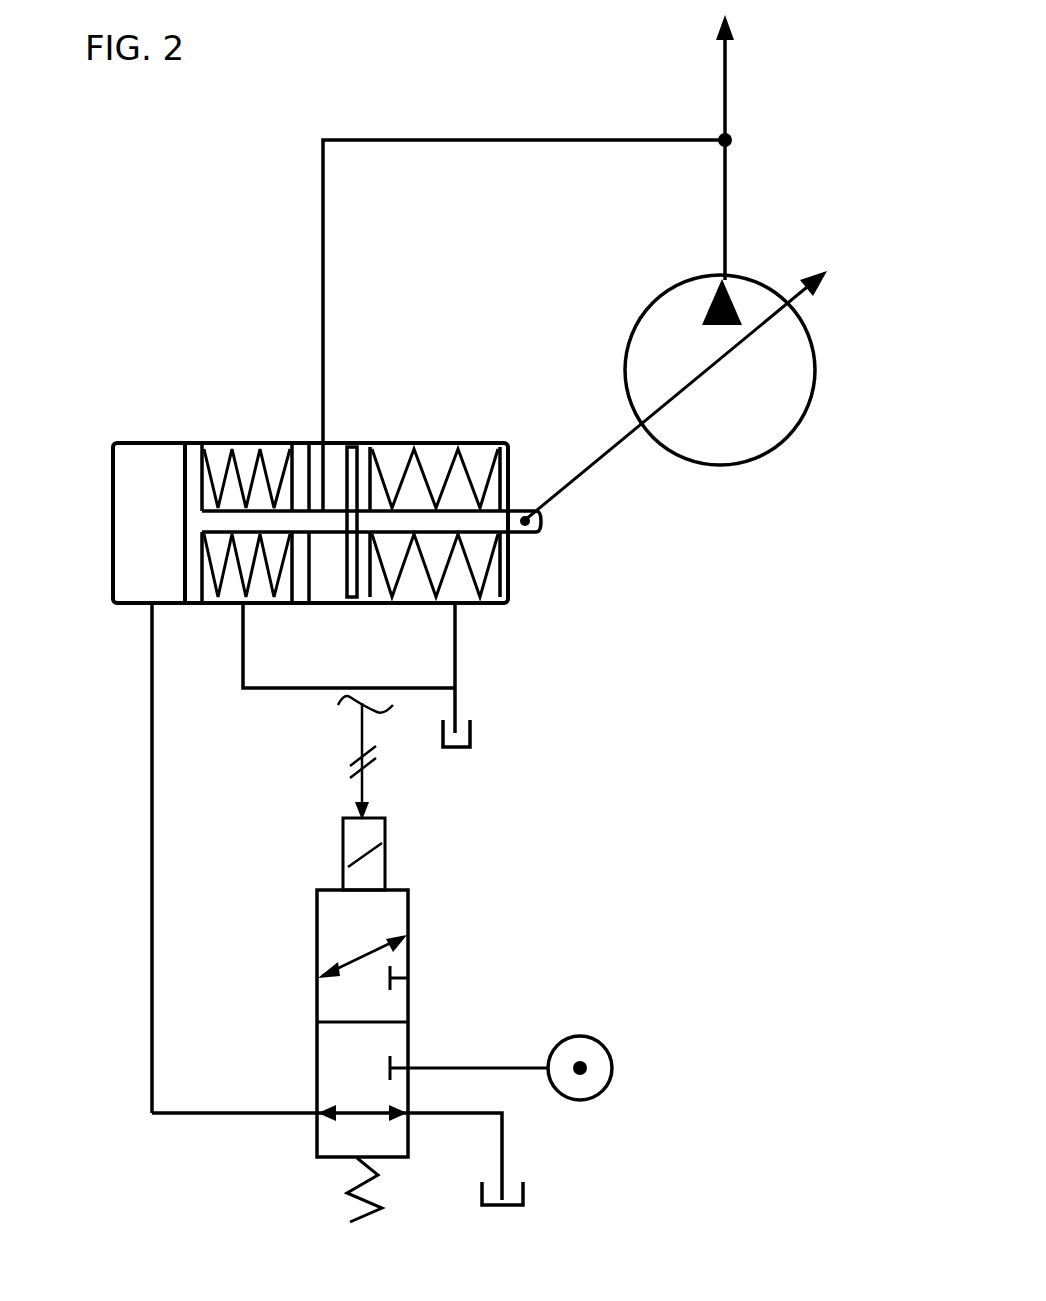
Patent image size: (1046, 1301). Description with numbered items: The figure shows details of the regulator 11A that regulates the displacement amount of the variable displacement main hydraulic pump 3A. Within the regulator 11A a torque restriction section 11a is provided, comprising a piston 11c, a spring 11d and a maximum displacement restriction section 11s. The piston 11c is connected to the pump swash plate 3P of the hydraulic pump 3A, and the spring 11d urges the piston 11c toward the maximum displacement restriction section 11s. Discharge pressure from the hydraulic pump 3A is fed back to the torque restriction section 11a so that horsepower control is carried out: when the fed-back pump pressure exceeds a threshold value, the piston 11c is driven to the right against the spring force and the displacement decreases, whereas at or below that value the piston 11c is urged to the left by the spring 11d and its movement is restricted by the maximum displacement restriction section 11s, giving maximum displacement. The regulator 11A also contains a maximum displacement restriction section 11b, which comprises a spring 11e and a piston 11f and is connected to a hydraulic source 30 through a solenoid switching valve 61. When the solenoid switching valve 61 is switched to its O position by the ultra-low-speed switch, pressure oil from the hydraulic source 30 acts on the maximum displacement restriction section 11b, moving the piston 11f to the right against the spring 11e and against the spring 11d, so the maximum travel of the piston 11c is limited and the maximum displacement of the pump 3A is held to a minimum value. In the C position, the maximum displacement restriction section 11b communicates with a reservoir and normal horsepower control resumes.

The regulator 11A is at (517, 593).
The torque restriction section 11a is at (337, 458).
The maximum displacement restriction section 11b is at (138, 460).
The piston 11c is at (345, 577).
The spring 11d is at (455, 602).
The spring 11e is at (268, 565).
The piston 11f is at (190, 478).
The maximum displacement restriction section 11s is at (300, 445).
The solenoid switching valve 61 is at (313, 957).
The hydraulic source 30 is at (607, 1048).
The pump swash plate 3P is at (613, 452).
The hydraulic pump 3A is at (785, 452).